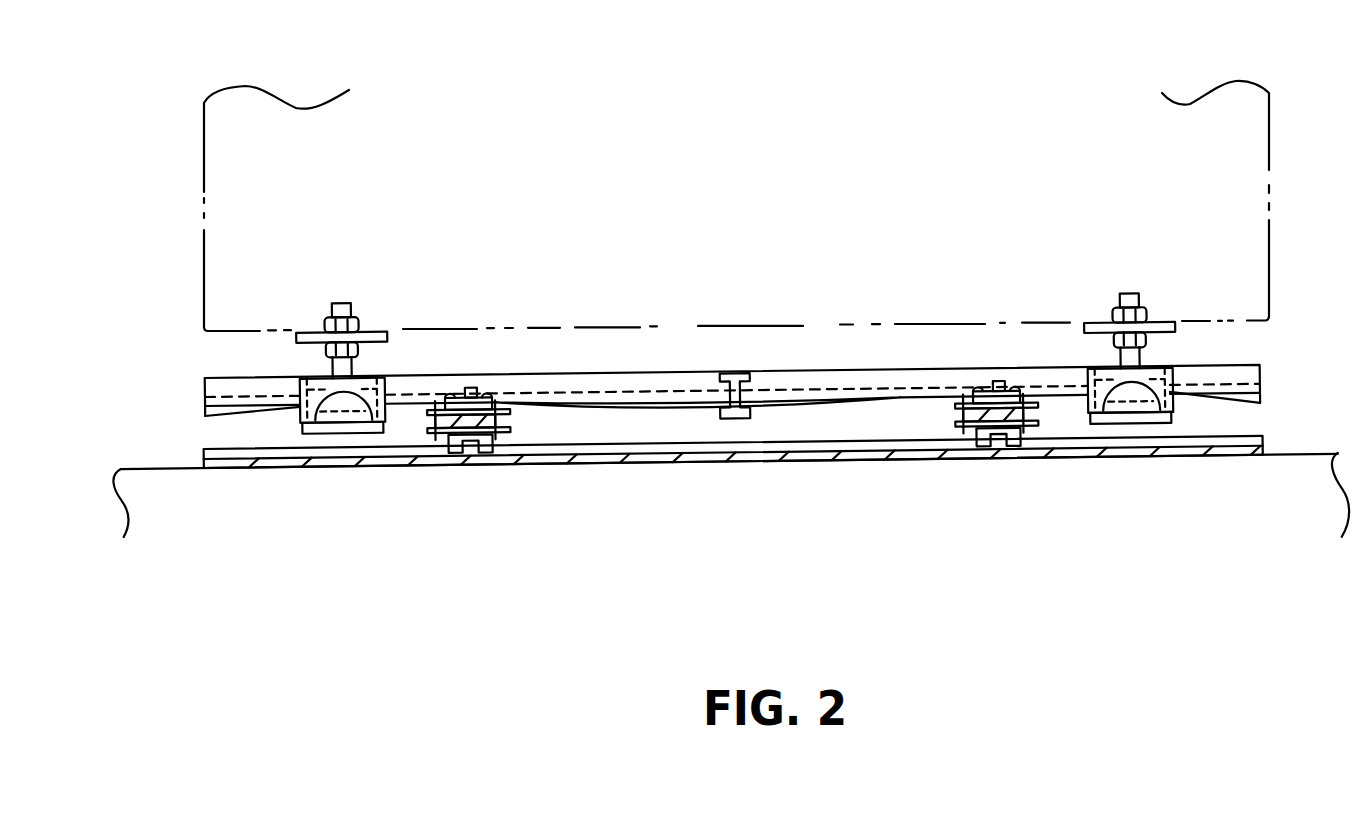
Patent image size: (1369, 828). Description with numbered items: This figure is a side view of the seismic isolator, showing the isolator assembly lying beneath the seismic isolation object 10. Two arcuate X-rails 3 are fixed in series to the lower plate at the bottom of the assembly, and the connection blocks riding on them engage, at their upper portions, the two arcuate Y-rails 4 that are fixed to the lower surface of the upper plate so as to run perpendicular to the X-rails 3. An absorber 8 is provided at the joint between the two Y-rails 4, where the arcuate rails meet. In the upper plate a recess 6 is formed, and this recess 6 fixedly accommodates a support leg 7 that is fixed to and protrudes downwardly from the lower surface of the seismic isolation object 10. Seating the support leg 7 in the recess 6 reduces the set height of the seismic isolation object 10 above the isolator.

The arcuate X-rail 3 is at (1000, 450).
The Y-rail 4 is at (819, 393).
The recess 6 is at (297, 418).
The support leg 7 is at (343, 370).
The absorber 8 is at (715, 378).
The seismic isolation object 10 is at (535, 172).